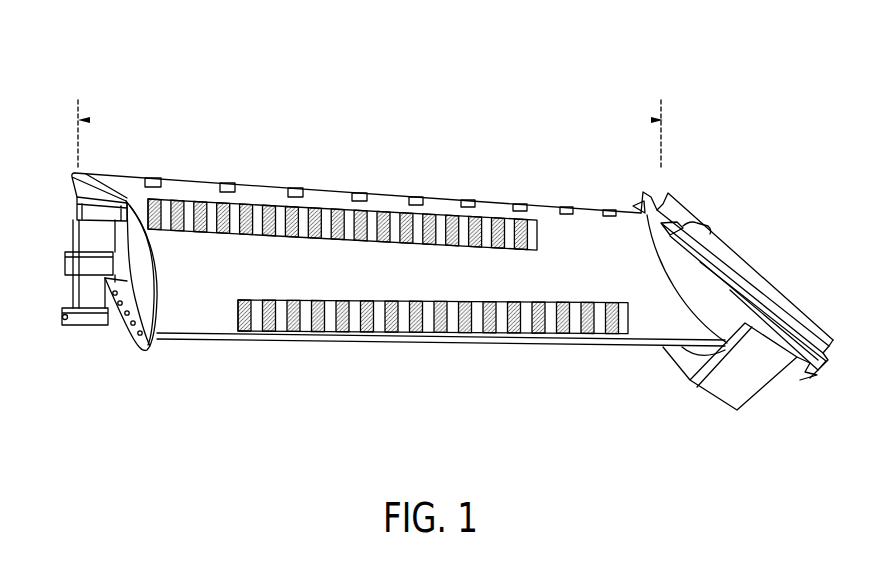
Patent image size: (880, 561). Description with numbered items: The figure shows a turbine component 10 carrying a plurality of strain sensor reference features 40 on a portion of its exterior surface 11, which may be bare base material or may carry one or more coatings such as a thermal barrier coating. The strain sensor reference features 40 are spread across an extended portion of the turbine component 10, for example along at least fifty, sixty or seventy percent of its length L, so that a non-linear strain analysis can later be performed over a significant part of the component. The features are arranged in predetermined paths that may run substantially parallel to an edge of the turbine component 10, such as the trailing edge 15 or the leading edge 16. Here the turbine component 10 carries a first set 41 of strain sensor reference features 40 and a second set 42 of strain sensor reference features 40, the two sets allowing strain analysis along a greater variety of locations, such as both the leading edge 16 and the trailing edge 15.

The turbine component 10 is at (98, 56).
The exterior surface 11 is at (178, 268).
The trailing edge 15 is at (630, 345).
The leading edge 16 is at (539, 204).
The strain sensor reference features 40 is at (246, 358).
The first set of strain sensor reference features 41 is at (443, 333).
The second set of strain sensor reference features 42 is at (335, 208).
The length L is at (370, 120).